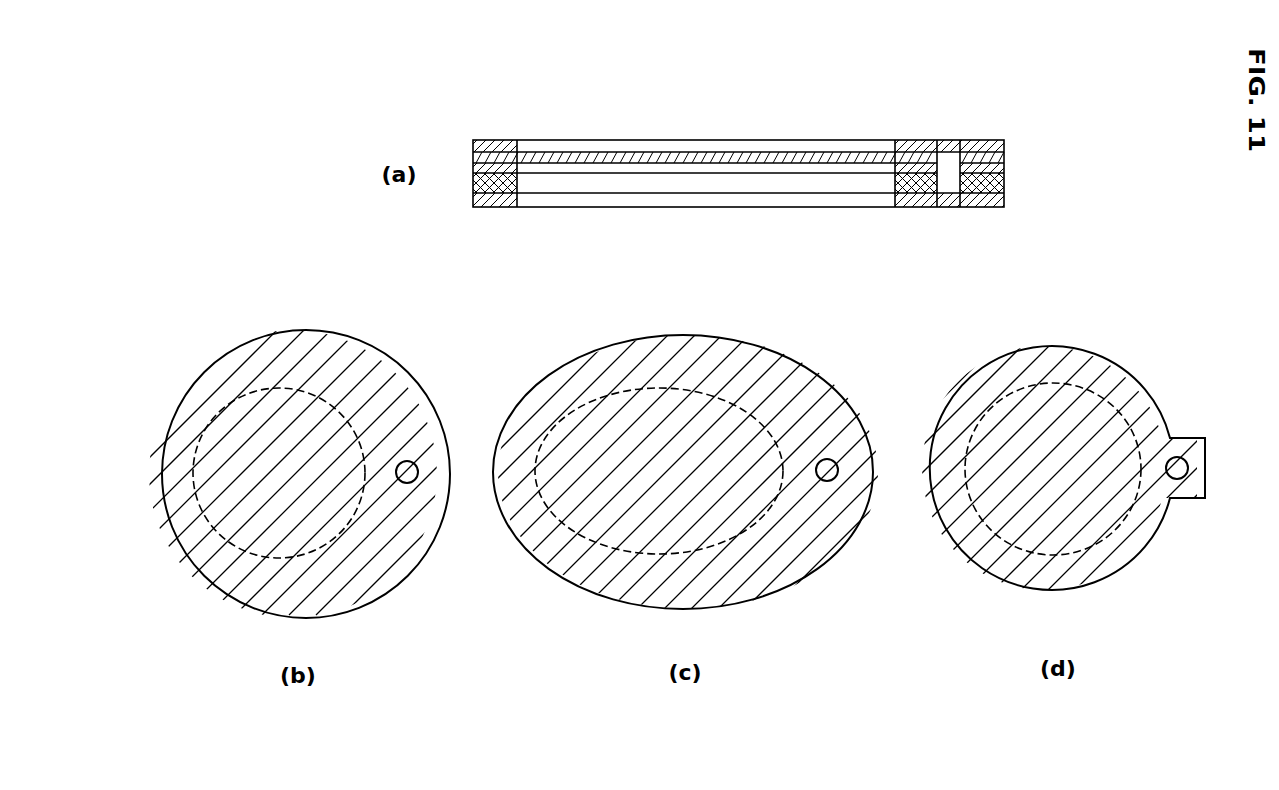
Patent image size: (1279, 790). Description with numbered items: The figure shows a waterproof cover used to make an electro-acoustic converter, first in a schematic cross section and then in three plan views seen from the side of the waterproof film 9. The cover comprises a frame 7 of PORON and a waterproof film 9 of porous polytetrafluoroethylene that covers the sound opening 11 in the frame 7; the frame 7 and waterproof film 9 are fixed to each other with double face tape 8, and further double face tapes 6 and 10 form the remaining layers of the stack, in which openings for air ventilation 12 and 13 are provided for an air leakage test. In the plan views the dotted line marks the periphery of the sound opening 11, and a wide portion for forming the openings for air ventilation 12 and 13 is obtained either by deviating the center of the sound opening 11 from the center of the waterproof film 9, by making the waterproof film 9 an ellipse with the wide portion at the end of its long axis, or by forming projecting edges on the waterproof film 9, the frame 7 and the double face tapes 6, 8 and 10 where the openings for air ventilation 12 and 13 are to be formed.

The double face tape 6 is at (1005, 202).
The frame 7 is at (1005, 183).
The double face tape 8 is at (1005, 165).
The waterproof film 9 is at (1005, 154).
The double face tape 10 is at (1004, 142).
The sound opening 11 is at (797, 183).
The opening for air ventilation 12 is at (945, 183).
The opening for air ventilation 13 is at (966, 148).